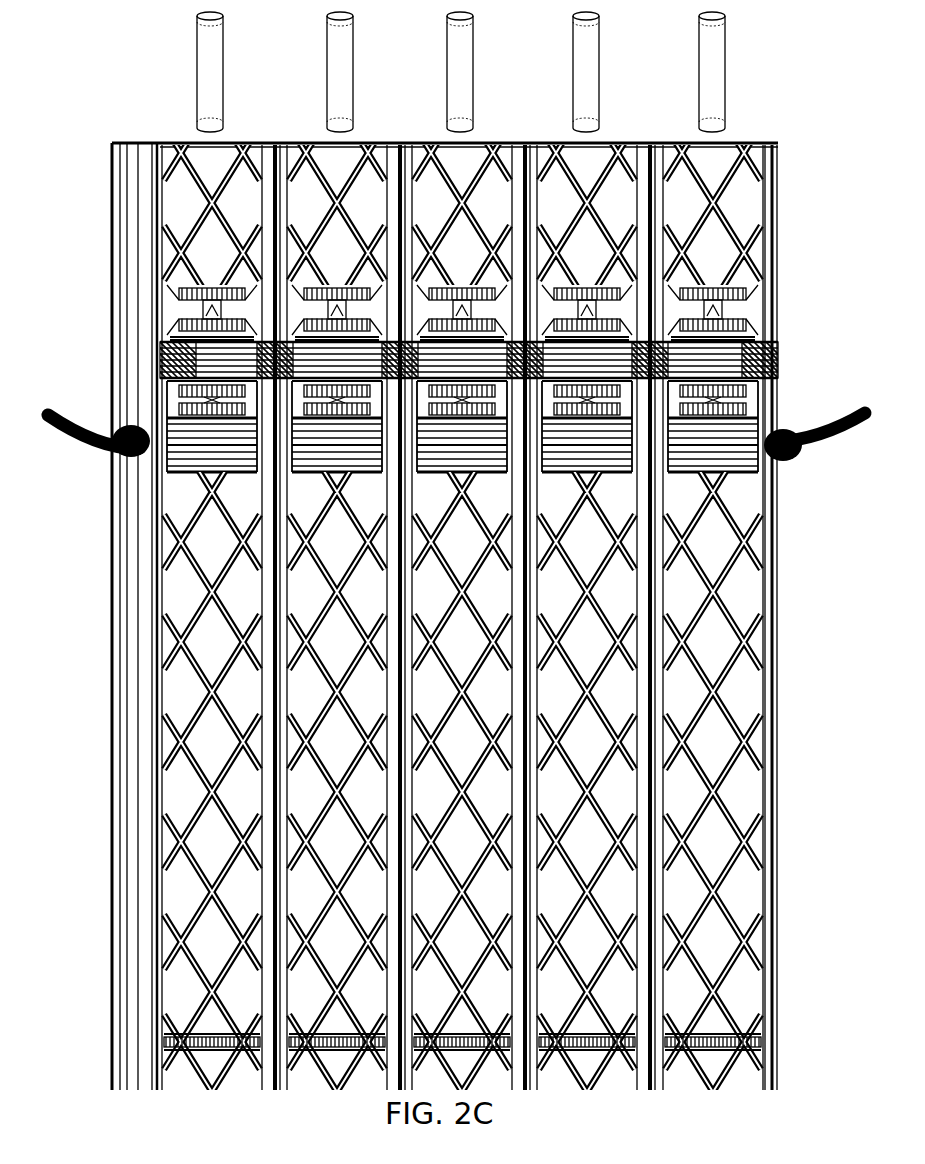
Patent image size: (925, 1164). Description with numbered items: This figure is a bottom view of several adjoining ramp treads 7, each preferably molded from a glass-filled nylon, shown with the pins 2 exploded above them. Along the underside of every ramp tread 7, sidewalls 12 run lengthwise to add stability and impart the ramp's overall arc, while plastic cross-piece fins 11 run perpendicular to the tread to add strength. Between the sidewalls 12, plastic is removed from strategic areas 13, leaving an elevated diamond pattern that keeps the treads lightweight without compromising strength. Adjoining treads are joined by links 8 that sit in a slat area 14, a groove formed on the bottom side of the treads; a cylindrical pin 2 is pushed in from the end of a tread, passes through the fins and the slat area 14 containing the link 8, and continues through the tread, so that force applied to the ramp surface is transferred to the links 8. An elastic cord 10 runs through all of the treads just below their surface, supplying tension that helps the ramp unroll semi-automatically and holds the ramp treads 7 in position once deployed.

The pins 2 is at (210, 84).
The ramp tread 7 is at (421, 589).
The link 8 is at (435, 347).
The elastic cord 10 is at (93, 448).
The fins 11 is at (228, 1038).
The sidewalls 12 is at (275, 748).
The plastic removed from strategic areas 13 is at (218, 645).
The slat area 14 is at (155, 352).